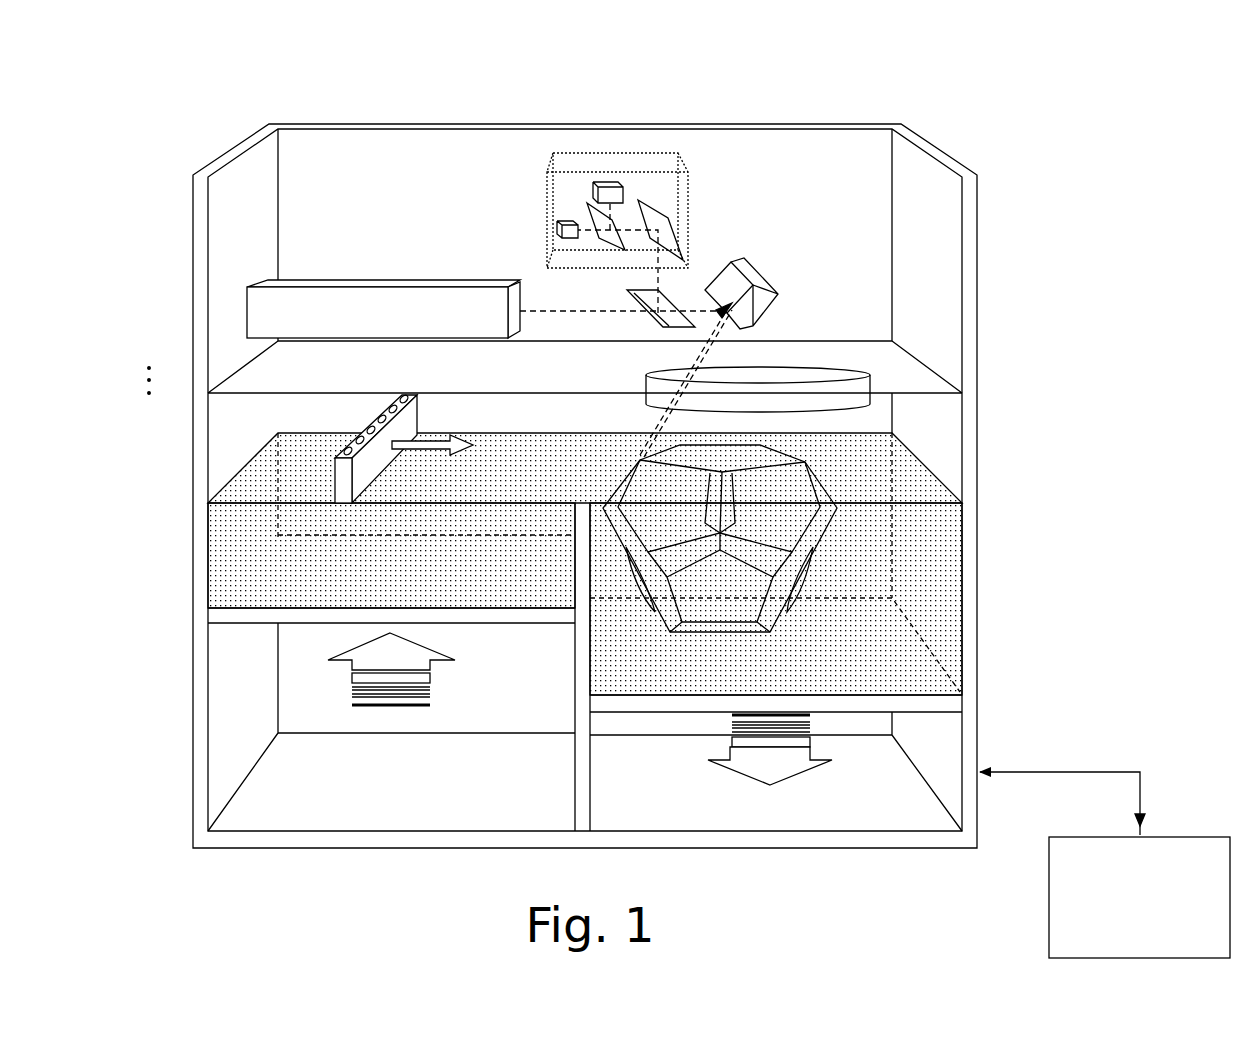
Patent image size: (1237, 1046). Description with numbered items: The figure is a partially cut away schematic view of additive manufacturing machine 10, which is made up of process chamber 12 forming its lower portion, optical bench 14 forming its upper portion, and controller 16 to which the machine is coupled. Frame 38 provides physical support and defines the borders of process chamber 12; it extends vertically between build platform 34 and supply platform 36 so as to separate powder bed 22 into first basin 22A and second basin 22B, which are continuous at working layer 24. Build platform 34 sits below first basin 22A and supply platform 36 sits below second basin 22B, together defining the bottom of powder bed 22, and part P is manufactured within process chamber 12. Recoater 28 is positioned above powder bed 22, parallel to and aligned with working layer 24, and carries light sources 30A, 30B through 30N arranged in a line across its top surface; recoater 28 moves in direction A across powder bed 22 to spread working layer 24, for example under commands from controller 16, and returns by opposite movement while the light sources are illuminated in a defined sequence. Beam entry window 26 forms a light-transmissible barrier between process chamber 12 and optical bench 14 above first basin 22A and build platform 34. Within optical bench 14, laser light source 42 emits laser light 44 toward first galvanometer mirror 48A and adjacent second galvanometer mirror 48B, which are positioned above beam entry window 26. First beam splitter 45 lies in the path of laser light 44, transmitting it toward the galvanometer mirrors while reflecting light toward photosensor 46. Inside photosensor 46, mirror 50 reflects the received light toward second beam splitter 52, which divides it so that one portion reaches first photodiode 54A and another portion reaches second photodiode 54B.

The additive manufacturing machine 10 is at (1008, 137).
The process chamber 12 is at (162, 655).
The optical bench 14 is at (183, 308).
The controller 16 is at (1128, 936).
The powder bed 22 is at (945, 540).
The first basin 22A is at (940, 592).
The second basin 22B is at (228, 553).
The working layer 24 is at (922, 482).
The beam entry window 26 is at (818, 377).
The recoater 28 is at (418, 420).
The light source 30A is at (343, 452).
The light source 30B is at (357, 432).
The light source 30N is at (388, 398).
The build platform 34 is at (700, 705).
The supply platform 36 is at (254, 617).
The frame 38 is at (582, 822).
The laser light source 42 is at (363, 312).
The laser light 44 is at (612, 315).
The first beam splitter 45 is at (677, 322).
The photosensor 46 is at (585, 148).
The first galvanometer mirror 48A is at (745, 285).
The second galvanometer mirror 48B is at (765, 297).
The mirror 50 is at (652, 214).
The second beam splitter 52 is at (612, 237).
The first photodiode 54A is at (620, 185).
The second photodiode 54B is at (556, 228).
The direction A is at (435, 442).
The part P is at (675, 622).